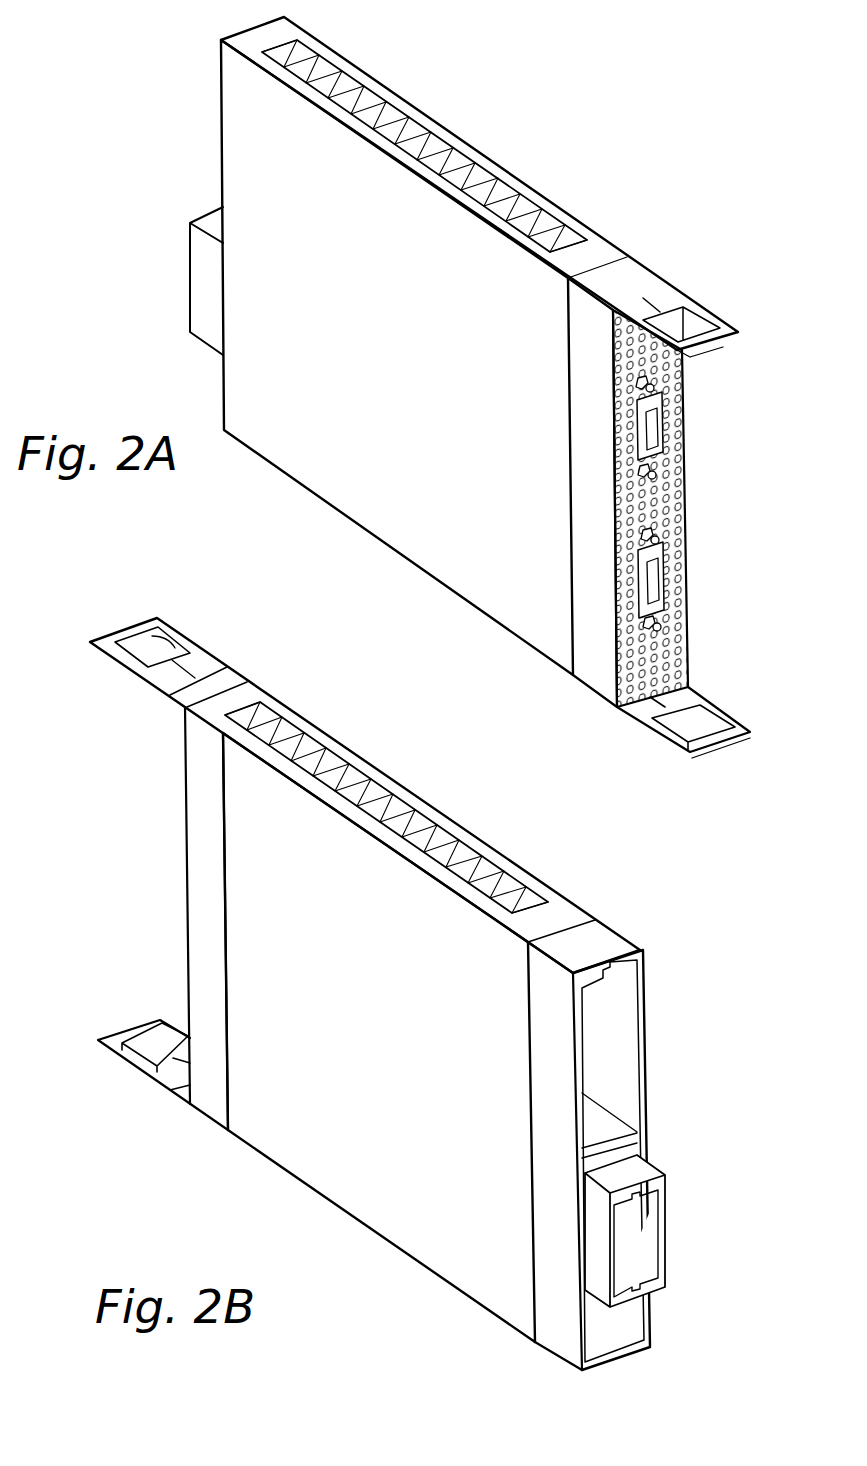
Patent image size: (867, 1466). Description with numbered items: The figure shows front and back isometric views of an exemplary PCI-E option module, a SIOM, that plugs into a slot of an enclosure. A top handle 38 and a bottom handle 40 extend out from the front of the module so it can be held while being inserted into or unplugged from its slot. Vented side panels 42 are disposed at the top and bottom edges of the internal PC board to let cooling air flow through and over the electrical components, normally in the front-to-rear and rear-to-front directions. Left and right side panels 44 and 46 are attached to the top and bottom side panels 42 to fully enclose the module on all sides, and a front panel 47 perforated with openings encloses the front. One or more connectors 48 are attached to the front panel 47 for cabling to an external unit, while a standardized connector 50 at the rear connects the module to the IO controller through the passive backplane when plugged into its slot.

In FIG. 2A, the top handle 38 is at (722, 326).
In FIG. 2B, the top handle 38 is at (123, 667).
In FIG. 2A, the bottom handle 40 is at (720, 743).
In FIG. 2B, the bottom handle 40 is at (132, 1065).
In FIG. 2A, the vented side panels 42 is at (517, 207).
In FIG. 2B, the vented side panels 42 is at (453, 857).
In FIG. 2B, the left side panel 44 is at (402, 1063).
In FIG. 2A, the right side panel 46 is at (475, 482).
In FIG. 2B, the right side panel 46 is at (617, 1042).
In FIG. 2A, the front panel 47 is at (670, 637).
In FIG. 2A, the connectors 48 is at (657, 430).
In FIG. 2B, the standardized connector 50 is at (638, 1233).